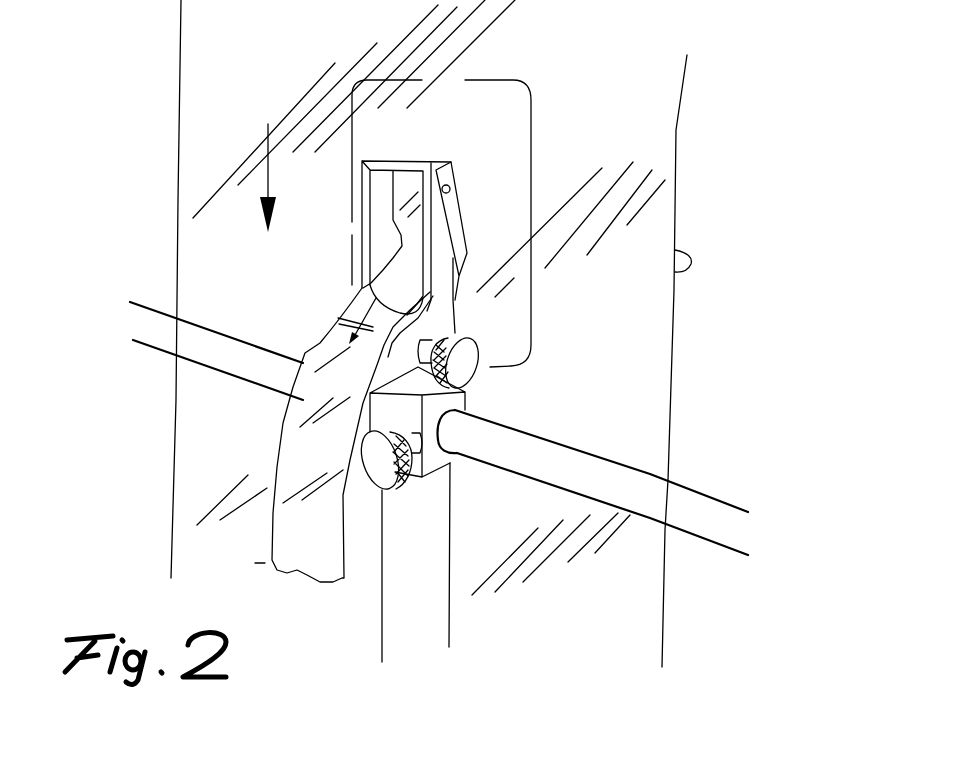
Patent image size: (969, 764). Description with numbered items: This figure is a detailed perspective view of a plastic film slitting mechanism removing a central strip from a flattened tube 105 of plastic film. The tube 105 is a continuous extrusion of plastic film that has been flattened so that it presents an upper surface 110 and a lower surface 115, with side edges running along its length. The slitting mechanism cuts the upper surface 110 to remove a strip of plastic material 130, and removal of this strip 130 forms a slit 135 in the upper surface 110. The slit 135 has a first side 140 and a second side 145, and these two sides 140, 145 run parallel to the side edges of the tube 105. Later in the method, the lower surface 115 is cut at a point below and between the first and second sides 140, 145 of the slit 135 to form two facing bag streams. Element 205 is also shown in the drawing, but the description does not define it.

The mounting surface 105 is at (670, 102).
The panel 110 is at (670, 198).
The aperture 115 is at (673, 273).
The strap 130 is at (295, 433).
The rod 135 is at (430, 515).
The thumbscrew 140 is at (398, 612).
The post 145 is at (455, 635).
The slot 205 is at (482, 317).